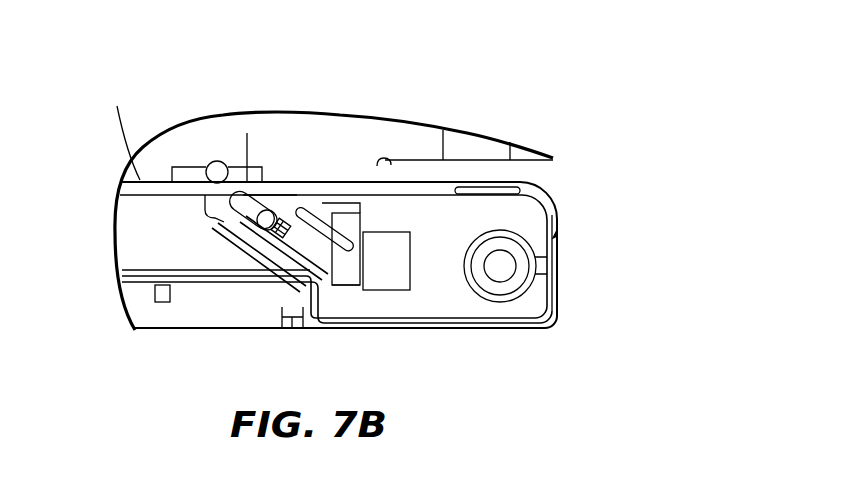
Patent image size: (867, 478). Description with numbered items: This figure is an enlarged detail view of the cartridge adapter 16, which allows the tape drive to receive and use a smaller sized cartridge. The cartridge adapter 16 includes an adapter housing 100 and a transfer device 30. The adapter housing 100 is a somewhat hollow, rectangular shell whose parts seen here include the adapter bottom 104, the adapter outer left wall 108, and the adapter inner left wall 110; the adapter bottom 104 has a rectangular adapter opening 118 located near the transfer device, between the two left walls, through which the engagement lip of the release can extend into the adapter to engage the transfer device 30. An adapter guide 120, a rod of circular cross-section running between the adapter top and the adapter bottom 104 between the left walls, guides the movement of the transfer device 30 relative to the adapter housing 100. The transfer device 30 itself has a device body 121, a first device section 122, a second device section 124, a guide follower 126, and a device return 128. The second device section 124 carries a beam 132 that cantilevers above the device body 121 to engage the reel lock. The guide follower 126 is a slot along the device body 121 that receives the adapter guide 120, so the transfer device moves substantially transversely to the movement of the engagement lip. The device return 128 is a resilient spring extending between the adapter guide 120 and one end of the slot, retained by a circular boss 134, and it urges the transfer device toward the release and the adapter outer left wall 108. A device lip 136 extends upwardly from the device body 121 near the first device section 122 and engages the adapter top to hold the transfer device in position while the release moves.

The cartridge adapter 16 is at (443, 119).
The transfer device 30 is at (315, 203).
The adapter housing 100 is at (190, 121).
The adapter bottom 104 is at (247, 133).
The adapter outer left wall 108 is at (313, 324).
The adapter inner left wall 110 is at (117, 129).
The adapter opening 118 is at (397, 284).
The adapter guide 120 is at (262, 197).
The device body 121 is at (223, 220).
The first device section 122 is at (352, 228).
The second device section 124 is at (217, 161).
The guide follower 126 is at (218, 237).
The device return 128 is at (250, 253).
The beam 132 is at (208, 176).
The circular boss 134 is at (283, 263).
The device lip 136 is at (346, 288).